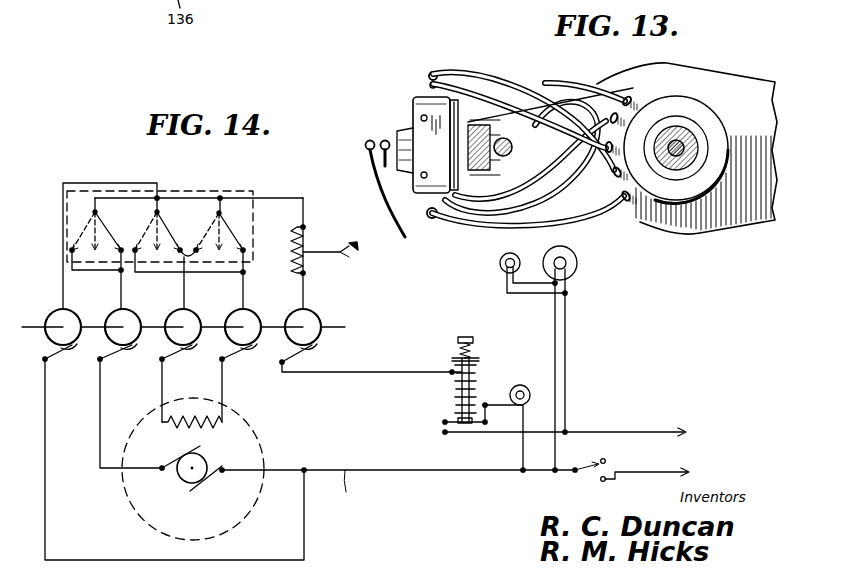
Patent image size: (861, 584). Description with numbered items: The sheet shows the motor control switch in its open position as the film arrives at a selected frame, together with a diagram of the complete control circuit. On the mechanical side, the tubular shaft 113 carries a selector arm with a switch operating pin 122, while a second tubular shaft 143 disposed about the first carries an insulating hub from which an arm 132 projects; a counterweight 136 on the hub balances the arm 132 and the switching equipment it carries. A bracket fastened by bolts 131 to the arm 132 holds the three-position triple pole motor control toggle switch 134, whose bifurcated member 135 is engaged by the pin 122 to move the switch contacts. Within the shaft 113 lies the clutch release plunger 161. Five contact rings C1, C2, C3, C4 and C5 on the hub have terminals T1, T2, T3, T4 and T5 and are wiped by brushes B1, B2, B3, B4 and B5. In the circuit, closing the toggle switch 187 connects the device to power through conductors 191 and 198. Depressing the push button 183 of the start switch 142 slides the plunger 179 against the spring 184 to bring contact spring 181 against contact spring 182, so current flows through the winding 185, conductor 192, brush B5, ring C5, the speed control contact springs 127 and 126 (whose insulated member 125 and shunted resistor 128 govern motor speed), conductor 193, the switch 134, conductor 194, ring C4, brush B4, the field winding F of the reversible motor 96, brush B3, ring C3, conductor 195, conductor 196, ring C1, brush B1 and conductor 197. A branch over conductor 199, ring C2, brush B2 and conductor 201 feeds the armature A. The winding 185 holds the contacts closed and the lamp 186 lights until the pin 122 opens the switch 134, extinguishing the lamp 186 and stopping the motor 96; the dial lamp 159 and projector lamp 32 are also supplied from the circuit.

In FIG. 13, the counterweight 136 is at (757, 88).
In FIG. 13, the plunger 161 is at (685, 141).
In FIG. 13, the tubular shaft 113 is at (677, 163).
In FIG. 13, the tubular shaft 143 is at (700, 158).
In FIG. 13, the motor control toggle switch 134 is at (400, 125).
In FIG. 14, the motor control toggle switch 134 is at (200, 191).
In FIG. 13, the bolts 131 is at (527, 188).
In FIG. 13, the arm 132 is at (545, 208).
In FIG. 13, the bifurcated member 135 is at (493, 180).
In FIG. 13, the switch operating pin 122 is at (507, 138).
In FIG. 13, the terminal T1 is at (626, 204).
In FIG. 13, the terminal T2 is at (612, 176).
In FIG. 13, the terminal T3 is at (614, 148).
In FIG. 13, the terminal T4 is at (619, 118).
In FIG. 13, the terminal T5 is at (628, 100).
In FIG. 14, the conductor 196 is at (63, 220).
In FIG. 14, the conductor 199 is at (121, 285).
In FIG. 14, the conductor 195 is at (184, 285).
In FIG. 14, the conductor 194 is at (246, 285).
In FIG. 14, the conductor 193 is at (287, 198).
In FIG. 14, the resistor 128 is at (291, 251).
In FIG. 14, the contact spring 126 is at (331, 250).
In FIG. 14, the contact spring 127 is at (331, 255).
In FIG. 14, the insulated member 125 is at (358, 248).
In FIG. 14, the conductor 201 is at (100, 424).
In FIG. 14, the reversible electric motor 96 is at (253, 432).
In FIG. 14, the field winding F is at (195, 402).
In FIG. 14, the armature A is at (206, 463).
In FIG. 14, the conductor 197 is at (304, 507).
In FIG. 14, the conductor 192 is at (365, 372).
In FIG. 14, the dial lamp 159 is at (500, 265).
In FIG. 14, the projector lamp 32 is at (577, 263).
In FIG. 14, the push button 183 is at (465, 337).
In FIG. 14, the push button start switch 142 is at (451, 342).
In FIG. 14, the spring 184 is at (472, 352).
In FIG. 14, the plunger 179 is at (472, 371).
In FIG. 14, the winding 185 is at (456, 385).
In FIG. 14, the contact spring 181 is at (452, 421).
In FIG. 14, the contact spring 182 is at (447, 436).
In FIG. 14, the conductor 191 is at (619, 430).
In FIG. 14, the lamp 186 is at (524, 388).
In FIG. 14, the toggle switch 187 is at (580, 467).
In FIG. 14, the conductor 198 is at (641, 473).
In FIG. 14, the contact ring C1 is at (76, 315).
In FIG. 14, the contact ring C2 is at (136, 315).
In FIG. 14, the contact ring C3 is at (196, 315).
In FIG. 14, the contact ring C4 is at (256, 315).
In FIG. 14, the contact ring C5 is at (316, 315).
In FIG. 14, the brush B1 is at (60, 360).
In FIG. 14, the brush B2 is at (117, 360).
In FIG. 14, the brush B3 is at (178, 360).
In FIG. 14, the brush B4 is at (238, 360).
In FIG. 14, the brush B5 is at (312, 358).